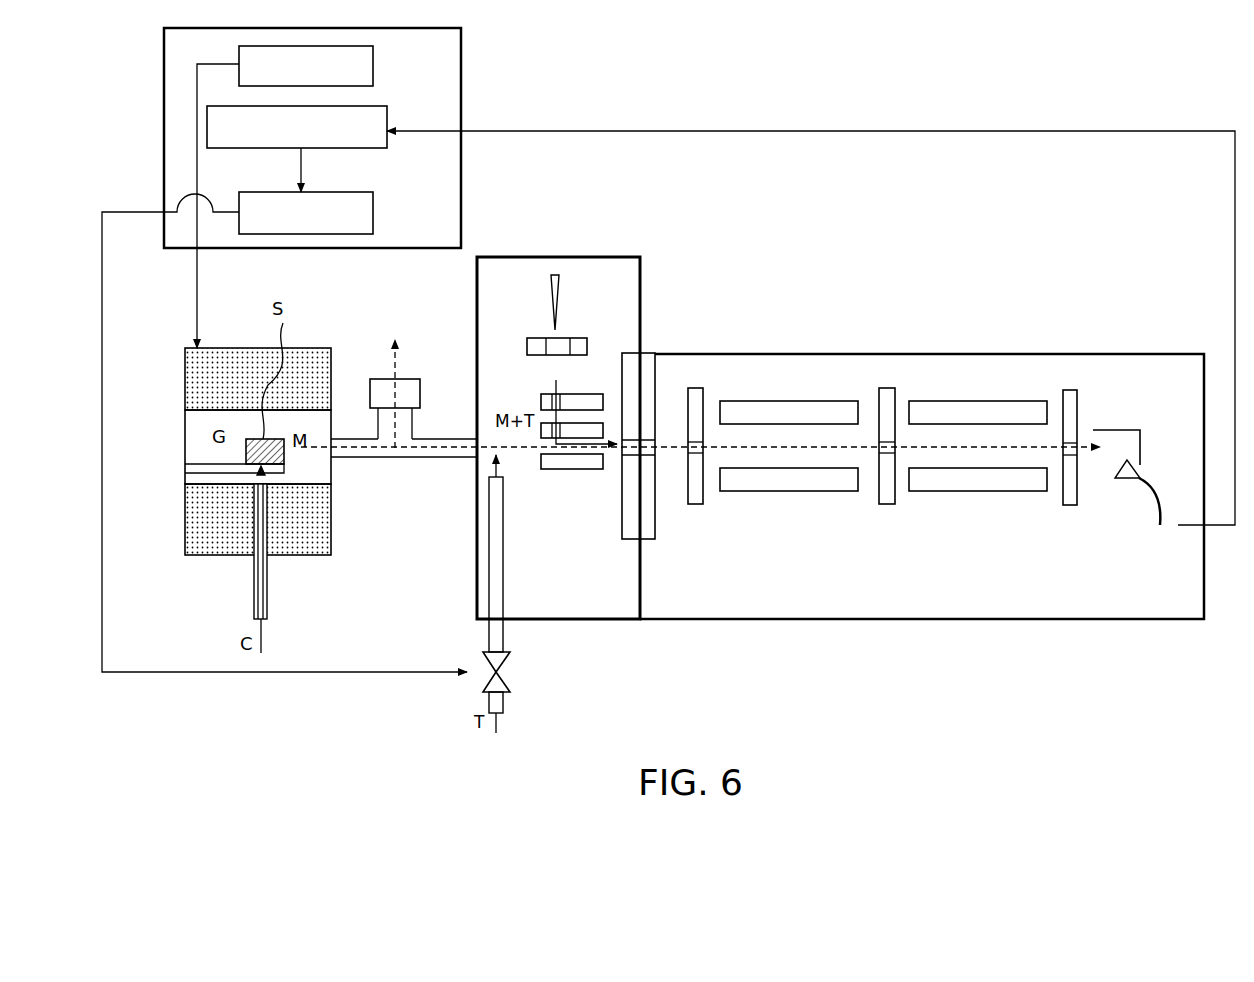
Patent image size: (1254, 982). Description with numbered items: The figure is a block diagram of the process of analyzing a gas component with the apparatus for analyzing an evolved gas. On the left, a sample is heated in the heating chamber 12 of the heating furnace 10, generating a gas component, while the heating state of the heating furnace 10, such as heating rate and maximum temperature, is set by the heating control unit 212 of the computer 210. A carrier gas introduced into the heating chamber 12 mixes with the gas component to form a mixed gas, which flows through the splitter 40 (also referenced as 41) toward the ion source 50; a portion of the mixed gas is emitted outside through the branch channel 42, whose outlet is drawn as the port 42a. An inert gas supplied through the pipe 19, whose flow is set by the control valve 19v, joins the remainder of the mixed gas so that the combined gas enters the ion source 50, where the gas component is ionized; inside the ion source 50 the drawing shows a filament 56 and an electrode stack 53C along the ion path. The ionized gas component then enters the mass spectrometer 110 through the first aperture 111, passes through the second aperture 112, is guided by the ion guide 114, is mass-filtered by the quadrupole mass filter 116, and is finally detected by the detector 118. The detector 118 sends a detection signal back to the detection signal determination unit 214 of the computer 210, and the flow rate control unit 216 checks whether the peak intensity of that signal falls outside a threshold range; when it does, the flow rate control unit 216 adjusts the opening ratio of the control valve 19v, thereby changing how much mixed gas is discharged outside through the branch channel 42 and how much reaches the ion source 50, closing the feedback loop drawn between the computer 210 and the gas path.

The heating furnace 10 is at (185, 373).
The heating chamber 12 is at (185, 447).
The gas supply pipe 19 is at (487, 638).
The control valve 19v is at (507, 672).
The splitter 40 is at (404, 485).
The introduction pipe 41 is at (388, 462).
The branch channel 42 is at (412, 423).
The exhaust port 42a is at (415, 378).
The ion source 50 is at (592, 257).
The electrode 53C is at (545, 393).
The filament 56 is at (562, 320).
The mass spectrometer 110 is at (1105, 230).
The first aperture 111 is at (642, 440).
The second aperture 112 is at (688, 449).
The ion guide 114 is at (783, 483).
The quadrupole mass filter 116 is at (958, 485).
The detector 118 is at (1148, 522).
The computer 210 is at (461, 62).
The heating control unit 212 is at (373, 81).
The detection signal determination unit 214 is at (387, 119).
The flow rate control unit 216 is at (373, 222).